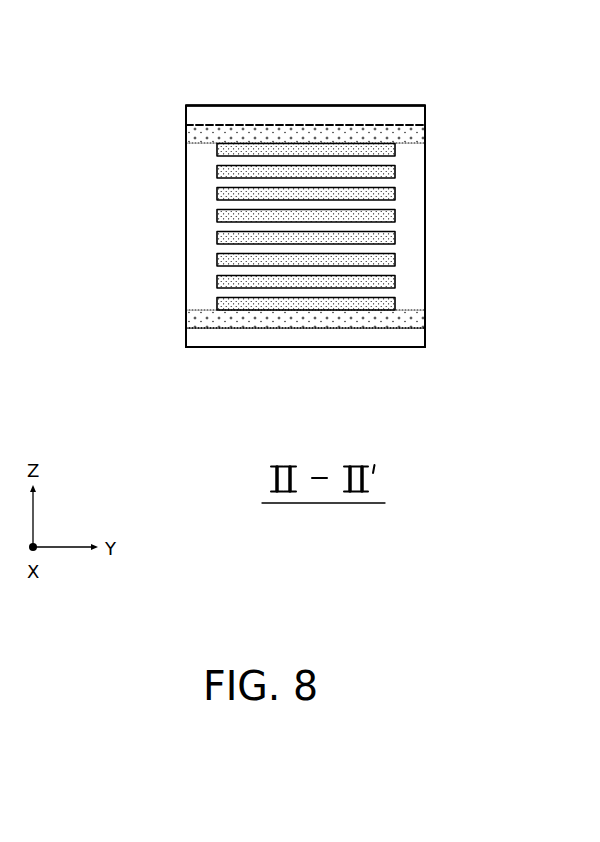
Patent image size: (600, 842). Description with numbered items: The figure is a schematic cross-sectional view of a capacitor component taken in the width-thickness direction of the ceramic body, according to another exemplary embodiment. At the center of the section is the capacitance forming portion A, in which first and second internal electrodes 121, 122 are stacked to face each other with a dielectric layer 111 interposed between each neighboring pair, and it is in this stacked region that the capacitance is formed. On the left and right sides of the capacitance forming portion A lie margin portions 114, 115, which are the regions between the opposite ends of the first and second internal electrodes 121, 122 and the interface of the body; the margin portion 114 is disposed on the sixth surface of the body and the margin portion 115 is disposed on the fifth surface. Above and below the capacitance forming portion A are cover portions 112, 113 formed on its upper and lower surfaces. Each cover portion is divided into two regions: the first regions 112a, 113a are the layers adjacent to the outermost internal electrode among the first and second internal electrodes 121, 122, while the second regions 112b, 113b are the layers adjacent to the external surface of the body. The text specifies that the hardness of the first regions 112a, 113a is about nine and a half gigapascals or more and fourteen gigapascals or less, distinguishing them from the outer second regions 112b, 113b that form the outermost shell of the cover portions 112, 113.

The cover portion 112 is at (387, 46).
The first region 112a is at (267, 137).
The second region 112b is at (344, 115).
The cover portion 113 is at (383, 405).
The first region 113a is at (272, 314).
The second region 113b is at (342, 335).
The dielectric layer 111 is at (395, 156).
The first internal electrode 121 is at (397, 143).
The second internal electrode 122 is at (395, 169).
The margin portion 114 is at (207, 273).
The margin portion 115 is at (418, 233).
The capacitance forming portion A is at (206, 228).